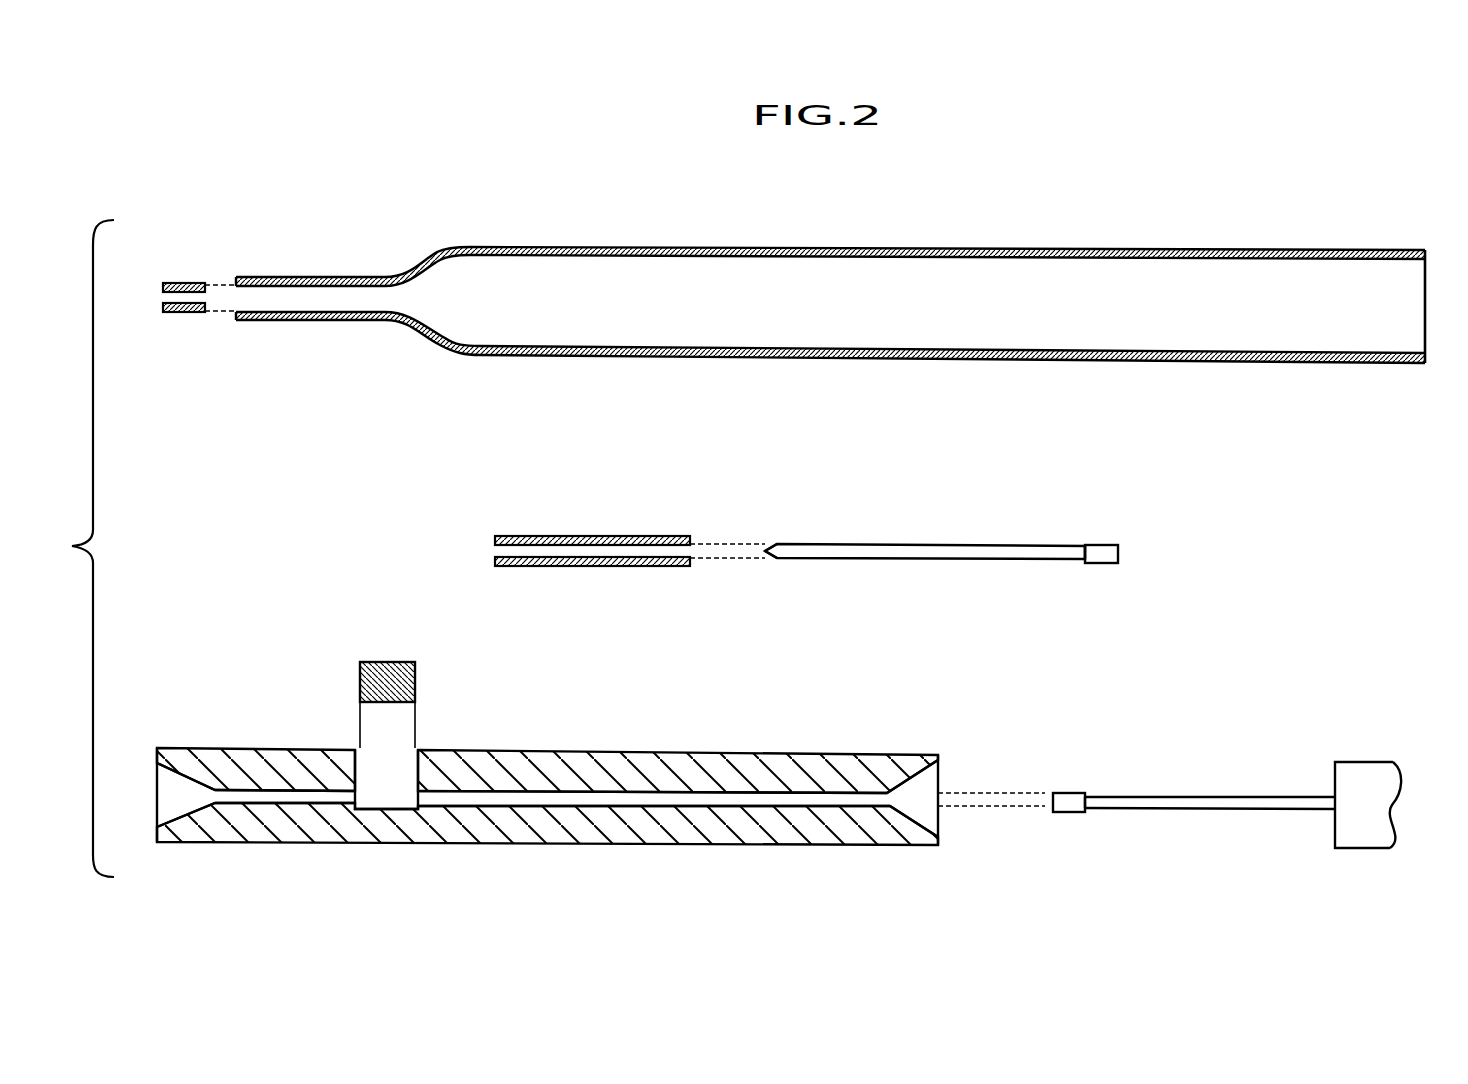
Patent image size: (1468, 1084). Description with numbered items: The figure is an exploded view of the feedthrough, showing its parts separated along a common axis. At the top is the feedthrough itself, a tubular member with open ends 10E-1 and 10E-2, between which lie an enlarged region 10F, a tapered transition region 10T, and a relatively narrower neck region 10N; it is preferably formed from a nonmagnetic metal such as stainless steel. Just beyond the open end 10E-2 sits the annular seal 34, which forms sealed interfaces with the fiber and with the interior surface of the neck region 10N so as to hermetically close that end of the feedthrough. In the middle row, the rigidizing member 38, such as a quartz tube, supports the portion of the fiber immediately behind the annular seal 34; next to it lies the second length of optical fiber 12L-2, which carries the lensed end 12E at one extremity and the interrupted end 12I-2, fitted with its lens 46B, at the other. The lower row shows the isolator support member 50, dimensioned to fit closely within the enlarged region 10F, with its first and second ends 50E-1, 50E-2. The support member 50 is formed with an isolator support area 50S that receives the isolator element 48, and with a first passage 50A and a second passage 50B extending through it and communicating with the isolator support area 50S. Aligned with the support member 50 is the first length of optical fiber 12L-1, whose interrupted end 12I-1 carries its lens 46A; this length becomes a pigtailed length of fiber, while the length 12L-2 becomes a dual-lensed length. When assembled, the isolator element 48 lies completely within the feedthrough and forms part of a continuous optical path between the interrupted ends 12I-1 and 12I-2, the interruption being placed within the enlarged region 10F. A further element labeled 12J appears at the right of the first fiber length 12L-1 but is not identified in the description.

The annular seal 34 is at (178, 280).
The open end 10E-2 is at (236, 277).
The neck region 10N is at (317, 277).
The tapered transition region 10T is at (436, 250).
The enlarged region 10F is at (928, 247).
The open end 10E-1 is at (1427, 250).
The rigidizing member 38 is at (575, 534).
The lensed end 12E is at (765, 551).
The second length of optical fiber 12L-2 is at (837, 532).
The interrupted end 12I-2 is at (1085, 552).
The lens 46B is at (1108, 555).
The isolator element 48 is at (378, 648).
The isolator support member 50 is at (313, 723).
The isolator support area 50S is at (390, 763).
The second end 50E-2 is at (185, 778).
The first passage 50A is at (577, 793).
The second passage 50B is at (305, 796).
The first end 50E-1 is at (943, 782).
The lens 46A is at (1073, 793).
The interrupted end 12I-1 is at (1086, 803).
The first length of optical fiber 12L-1 is at (1202, 781).
The lead junction 12J is at (1367, 770).